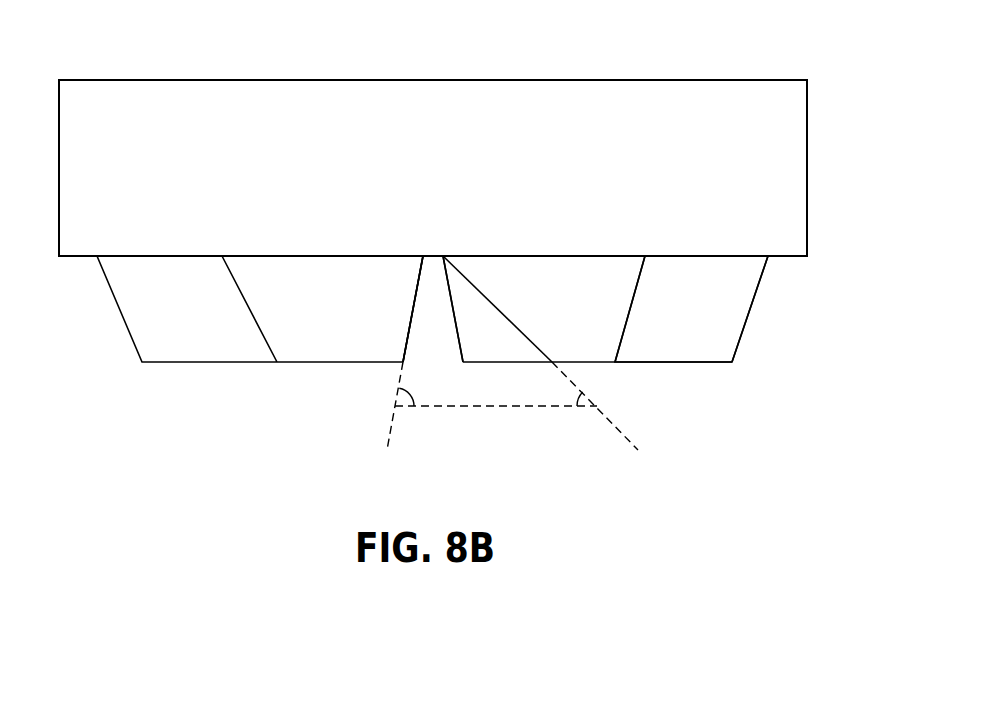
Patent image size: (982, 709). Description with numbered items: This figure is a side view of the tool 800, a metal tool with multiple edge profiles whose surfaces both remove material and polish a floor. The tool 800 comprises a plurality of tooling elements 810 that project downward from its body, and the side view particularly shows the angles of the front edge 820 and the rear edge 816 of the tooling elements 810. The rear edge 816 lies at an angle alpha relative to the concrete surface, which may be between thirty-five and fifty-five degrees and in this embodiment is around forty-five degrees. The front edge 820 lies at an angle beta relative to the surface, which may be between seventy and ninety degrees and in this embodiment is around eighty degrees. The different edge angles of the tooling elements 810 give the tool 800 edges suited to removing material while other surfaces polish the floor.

The tool 800 is at (762, 45).
The tooling element 810 is at (683, 337).
The rear edge 816 is at (493, 350).
The front edge 820 is at (405, 345).